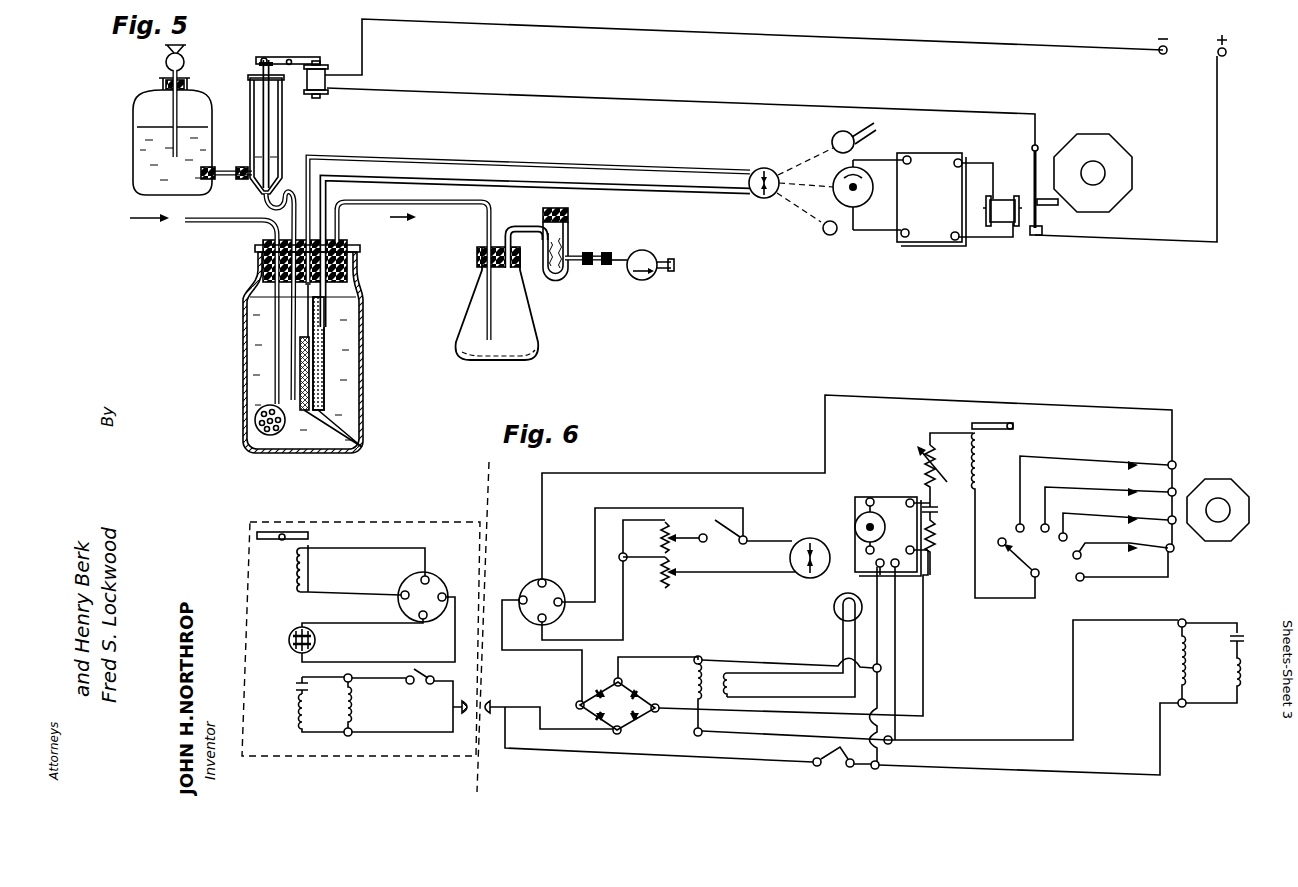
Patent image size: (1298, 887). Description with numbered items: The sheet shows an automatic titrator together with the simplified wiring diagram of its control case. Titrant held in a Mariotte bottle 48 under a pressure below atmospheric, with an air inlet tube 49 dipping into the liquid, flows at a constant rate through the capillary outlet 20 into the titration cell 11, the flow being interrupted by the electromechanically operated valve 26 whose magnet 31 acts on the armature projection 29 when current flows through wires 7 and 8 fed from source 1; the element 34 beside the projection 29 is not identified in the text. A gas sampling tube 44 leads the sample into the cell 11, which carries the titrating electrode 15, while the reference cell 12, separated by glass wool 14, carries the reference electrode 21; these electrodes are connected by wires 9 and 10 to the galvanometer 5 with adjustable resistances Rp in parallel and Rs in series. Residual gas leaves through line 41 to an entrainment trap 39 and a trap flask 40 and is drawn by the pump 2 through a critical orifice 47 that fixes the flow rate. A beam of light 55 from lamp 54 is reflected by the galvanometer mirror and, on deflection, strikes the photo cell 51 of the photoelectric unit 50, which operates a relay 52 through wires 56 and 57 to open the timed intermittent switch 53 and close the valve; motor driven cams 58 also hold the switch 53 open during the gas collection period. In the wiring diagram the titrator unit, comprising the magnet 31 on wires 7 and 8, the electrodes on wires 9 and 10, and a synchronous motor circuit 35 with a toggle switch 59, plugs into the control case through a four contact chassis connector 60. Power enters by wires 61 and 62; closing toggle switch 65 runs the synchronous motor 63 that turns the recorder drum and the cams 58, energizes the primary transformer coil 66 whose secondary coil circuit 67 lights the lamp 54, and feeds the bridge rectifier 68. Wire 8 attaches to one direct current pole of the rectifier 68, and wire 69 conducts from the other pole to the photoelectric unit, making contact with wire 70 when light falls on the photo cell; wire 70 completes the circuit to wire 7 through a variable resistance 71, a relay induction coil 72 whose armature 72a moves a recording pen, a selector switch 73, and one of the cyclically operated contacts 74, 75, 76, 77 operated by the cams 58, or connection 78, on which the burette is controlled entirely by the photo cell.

In FIG. 5, the source 1 is at (1190, 47).
In FIG. 5, the pump 2 is at (640, 251).
In FIG. 5, the galvanometer 5 is at (758, 172).
In FIG. 6, the galvanometer 5 is at (796, 544).
In FIG. 5, the wire 7 is at (886, 38).
In FIG. 6, the wire 7 is at (397, 548).
In FIG. 5, the wire 8 is at (1222, 101).
In FIG. 6, the wire 8 is at (372, 592).
In FIG. 6, the wire 9 is at (356, 623).
In FIG. 6, the wire 10 is at (381, 659).
In FIG. 5, the titration cell 11 is at (343, 357).
In FIG. 5, the reference cell 12 is at (321, 337).
In FIG. 5, the glass wool 14 is at (325, 383).
In FIG. 5, the titration electrode 15 is at (347, 434).
In FIG. 6, the titration electrode 15 is at (292, 628).
In FIG. 5, the burette capillary tube 20 is at (287, 390).
In FIG. 5, the reference electrode 21 is at (322, 303).
In FIG. 6, the reference electrode 21 is at (290, 650).
In FIG. 5, the electromechanically operated valve 26 is at (263, 180).
In FIG. 5, the armature projection 29 is at (260, 58).
In FIG. 6, the armature projection 29 is at (267, 530).
In FIG. 5, the electromagnet 31 is at (325, 72).
In FIG. 6, the electromagnet 31 is at (323, 568).
In FIG. 5, the pivot 34 is at (291, 60).
In FIG. 6, the synchronous motor circuit 35 is at (348, 713).
In FIG. 5, the entrainment trap 39 is at (480, 312).
In FIG. 5, the trap flask 40 is at (569, 230).
In FIG. 5, the tube 41 is at (427, 204).
In FIG. 5, the gas sampling tube 44 is at (260, 223).
In FIG. 5, the critical orifice 47 is at (600, 267).
In FIG. 5, the Mariotte bottle 48 is at (153, 112).
In FIG. 5, the air inlet tube 49 is at (177, 107).
In FIG. 5, the photoelectric cell unit 50 is at (930, 168).
In FIG. 6, the photoelectric cell unit 50 is at (893, 503).
In FIG. 5, the photo cell 51 is at (863, 200).
In FIG. 6, the photo cell 51 is at (862, 524).
In FIG. 5, the relay 52 is at (1000, 218).
In FIG. 5, the timed intermittent switch 53 is at (1040, 229).
In FIG. 5, the light bulb 54 is at (835, 140).
In FIG. 6, the light bulb 54 is at (836, 612).
In FIG. 5, the beam of light 55 is at (802, 212).
In FIG. 5, the wire 56 is at (966, 166).
In FIG. 5, the wire 57 is at (963, 238).
In FIG. 5, the motor driven cams 58 is at (1083, 152).
In FIG. 6, the motor driven cams 58 is at (1216, 480).
In FIG. 6, the toggle switch 59 is at (423, 682).
In FIG. 6, the four contact chassis connector 60 is at (413, 594).
In FIG. 6, the wire 61 is at (500, 717).
In FIG. 6, the wire 62 is at (498, 702).
In FIG. 6, the synchronous motor 63 is at (1230, 681).
In FIG. 6, the toggle switch 65 is at (834, 757).
In FIG. 6, the primary transformer coil 66 is at (696, 665).
In FIG. 6, the transformer secondary coil circuit 67 is at (732, 681).
In FIG. 6, the bridge rectifier 68 is at (617, 706).
In FIG. 6, the wire 69 is at (758, 712).
In FIG. 6, the wire 70 is at (930, 434).
In FIG. 6, the variable resistance 71 is at (925, 460).
In FIG. 6, the relay induction coil 72 is at (979, 460).
In FIG. 6, the armature 72a is at (1003, 425).
In FIG. 6, the selector switch 73 is at (1015, 557).
In FIG. 6, the cyclically operated contact 74 is at (1018, 524).
In FIG. 6, the cyclically operated contact 75 is at (1044, 524).
In FIG. 6, the cyclically operated contact 76 is at (1063, 531).
In FIG. 6, the cyclically operated contact 77 is at (1079, 551).
In FIG. 6, the connection 78 is at (1084, 579).
In FIG. 6, the adjustable resistance in parallel Rp is at (670, 528).
In FIG. 6, the adjustable resistance in series Rs is at (667, 578).